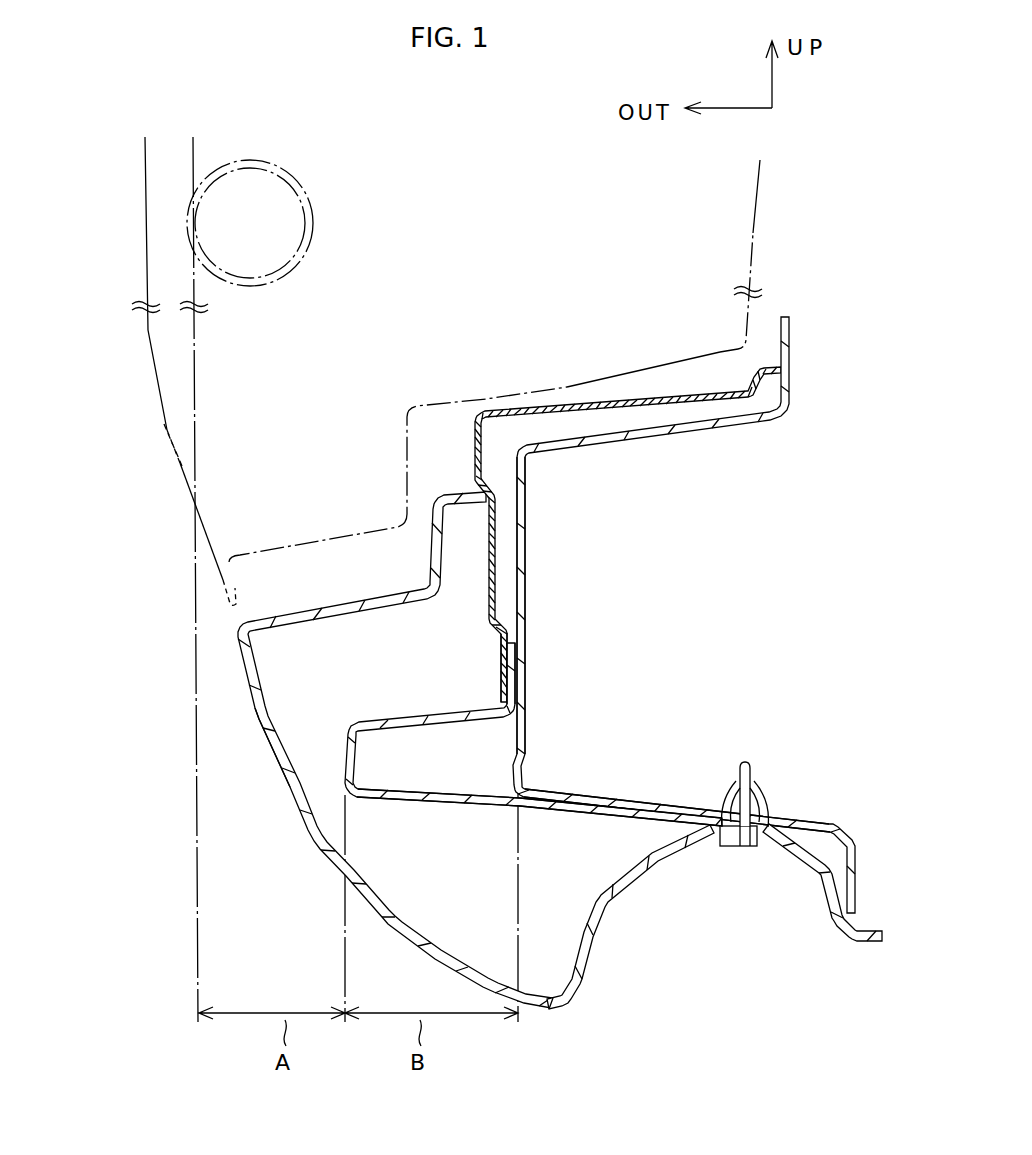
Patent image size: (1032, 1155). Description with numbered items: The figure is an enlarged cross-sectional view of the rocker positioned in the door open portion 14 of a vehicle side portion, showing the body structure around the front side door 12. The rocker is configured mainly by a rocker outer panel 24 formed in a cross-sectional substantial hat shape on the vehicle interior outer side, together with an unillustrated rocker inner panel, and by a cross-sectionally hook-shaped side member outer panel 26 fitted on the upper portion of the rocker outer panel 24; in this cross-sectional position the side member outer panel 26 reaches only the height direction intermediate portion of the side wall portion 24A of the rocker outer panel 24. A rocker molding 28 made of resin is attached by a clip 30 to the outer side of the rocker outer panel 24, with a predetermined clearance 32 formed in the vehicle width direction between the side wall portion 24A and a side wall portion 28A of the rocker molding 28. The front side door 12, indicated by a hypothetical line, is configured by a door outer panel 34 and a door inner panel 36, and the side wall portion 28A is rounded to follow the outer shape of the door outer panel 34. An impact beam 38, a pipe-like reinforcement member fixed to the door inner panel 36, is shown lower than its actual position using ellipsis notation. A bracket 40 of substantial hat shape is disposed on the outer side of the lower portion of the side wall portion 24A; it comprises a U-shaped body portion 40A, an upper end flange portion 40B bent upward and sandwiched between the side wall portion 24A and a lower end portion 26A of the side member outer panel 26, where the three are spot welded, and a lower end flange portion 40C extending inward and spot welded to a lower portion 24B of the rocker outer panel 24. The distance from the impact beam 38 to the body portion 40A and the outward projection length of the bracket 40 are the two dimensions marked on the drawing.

The front side door 12 is at (148, 379).
The door open portion 14 is at (600, 284).
The rocker outer panel 24 is at (542, 585).
The side wall portion 24A is at (527, 527).
The lower portion 24B is at (600, 795).
The side member outer panel 26 is at (507, 399).
The lower end portion 26A is at (501, 680).
The rocker molding 28 is at (243, 708).
The side wall portion 28A is at (267, 744).
The clip 30 is at (742, 848).
The clearance 32 is at (372, 675).
The door outer panel 34 is at (167, 443).
The door inner panel 36 is at (757, 236).
The impact beam 38 is at (314, 199).
The bracket 40 is at (331, 771).
The body portion 40A is at (452, 808).
The upper end flange portion 40B is at (516, 655).
The lower end flange portion 40C is at (630, 824).